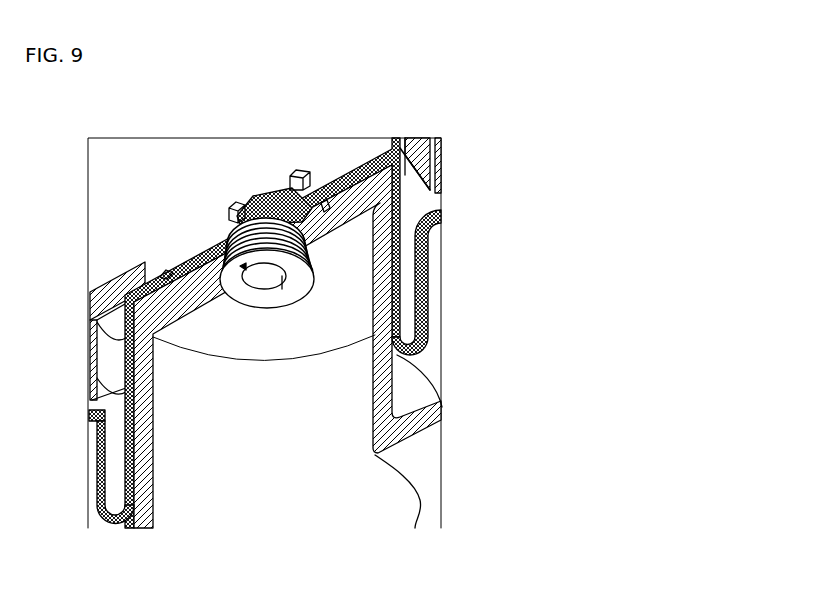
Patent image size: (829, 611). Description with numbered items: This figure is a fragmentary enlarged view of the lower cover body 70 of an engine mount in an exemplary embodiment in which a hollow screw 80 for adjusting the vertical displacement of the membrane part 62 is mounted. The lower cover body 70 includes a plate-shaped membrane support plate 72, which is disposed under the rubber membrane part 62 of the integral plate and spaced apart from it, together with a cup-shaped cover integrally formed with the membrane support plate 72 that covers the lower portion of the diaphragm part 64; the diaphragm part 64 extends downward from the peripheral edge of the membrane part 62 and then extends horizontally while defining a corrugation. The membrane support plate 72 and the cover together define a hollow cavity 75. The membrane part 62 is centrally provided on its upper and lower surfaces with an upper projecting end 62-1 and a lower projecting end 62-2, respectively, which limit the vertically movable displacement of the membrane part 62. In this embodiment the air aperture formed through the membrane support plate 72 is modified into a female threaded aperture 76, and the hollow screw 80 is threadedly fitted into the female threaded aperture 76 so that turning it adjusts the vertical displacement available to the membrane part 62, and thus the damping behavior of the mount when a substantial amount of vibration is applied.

The membrane part 62 is at (182, 268).
The upper projecting end 62-1 is at (263, 203).
The lower projecting end 62-2 is at (313, 193).
The membrane support plate 72 is at (182, 306).
The hollow screw 80 is at (259, 297).
The female threaded aperture 76 is at (288, 256).
The lower cover body 70 is at (395, 378).
The hollow cavity 75 is at (130, 441).
The diaphragm part 64 is at (118, 512).